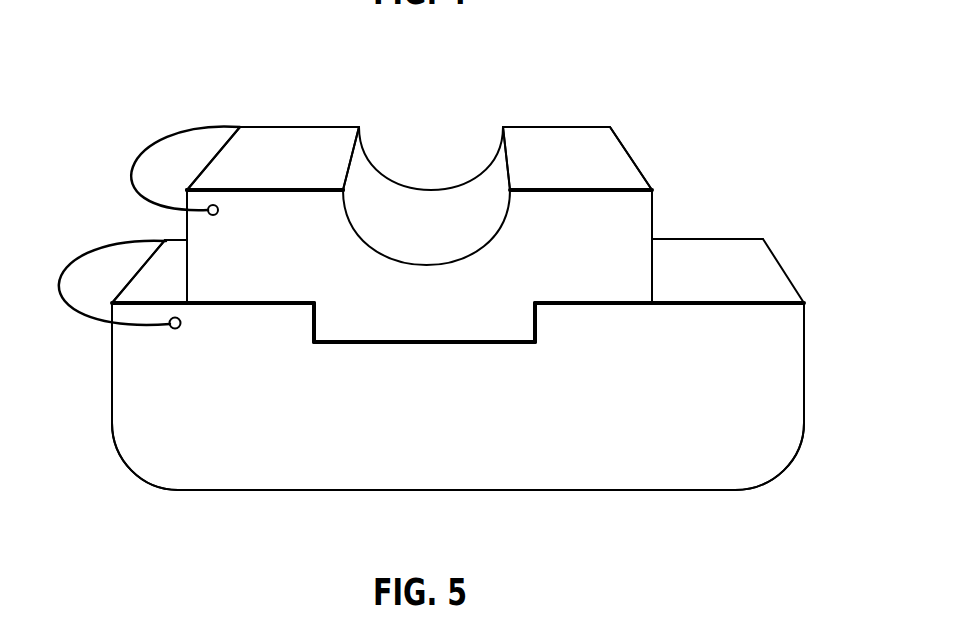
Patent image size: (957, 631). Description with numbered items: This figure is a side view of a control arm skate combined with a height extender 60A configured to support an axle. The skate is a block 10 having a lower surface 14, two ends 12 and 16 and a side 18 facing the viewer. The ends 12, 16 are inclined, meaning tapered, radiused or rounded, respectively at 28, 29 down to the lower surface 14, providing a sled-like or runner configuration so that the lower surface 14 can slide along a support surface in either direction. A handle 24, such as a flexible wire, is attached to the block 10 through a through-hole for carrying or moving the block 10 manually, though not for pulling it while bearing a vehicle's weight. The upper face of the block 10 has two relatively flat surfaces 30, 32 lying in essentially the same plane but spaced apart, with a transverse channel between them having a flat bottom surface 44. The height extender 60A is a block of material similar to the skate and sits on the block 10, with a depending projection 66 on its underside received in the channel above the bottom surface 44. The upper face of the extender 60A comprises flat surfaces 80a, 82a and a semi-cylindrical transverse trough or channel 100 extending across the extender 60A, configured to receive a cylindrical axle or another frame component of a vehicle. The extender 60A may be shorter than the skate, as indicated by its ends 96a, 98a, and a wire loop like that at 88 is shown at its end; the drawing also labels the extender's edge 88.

The block 10 is at (753, 234).
The end 12 is at (110, 385).
The lower surface 14 is at (553, 493).
The end 16 is at (806, 378).
The side 18 is at (400, 432).
The handle 24 is at (108, 250).
The inclined portion 28 is at (147, 481).
The inclined portion 29 is at (768, 481).
The flat surface 30 is at (698, 257).
The flat surface 32 is at (125, 297).
The flat bottom surface 44 is at (420, 340).
The depending projection 66 is at (458, 332).
The height extender 60A is at (529, 123).
The flat surface 80a is at (603, 135).
The flat surface 82a is at (295, 135).
The front edge 88 is at (593, 67).
The side edge 96a is at (655, 200).
The tether loop 98a is at (197, 176).
The semi-cylindrical transverse trough 100 is at (362, 122).